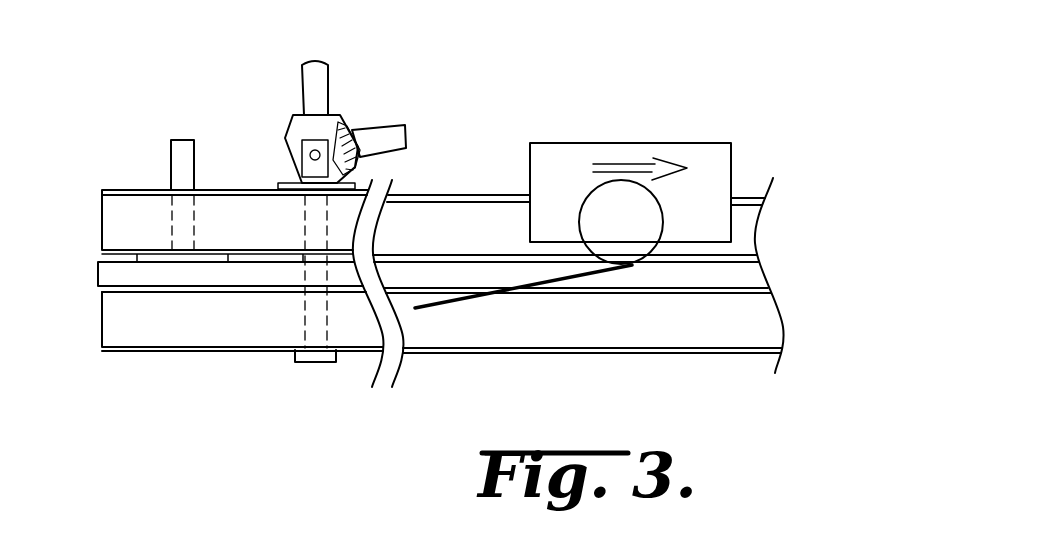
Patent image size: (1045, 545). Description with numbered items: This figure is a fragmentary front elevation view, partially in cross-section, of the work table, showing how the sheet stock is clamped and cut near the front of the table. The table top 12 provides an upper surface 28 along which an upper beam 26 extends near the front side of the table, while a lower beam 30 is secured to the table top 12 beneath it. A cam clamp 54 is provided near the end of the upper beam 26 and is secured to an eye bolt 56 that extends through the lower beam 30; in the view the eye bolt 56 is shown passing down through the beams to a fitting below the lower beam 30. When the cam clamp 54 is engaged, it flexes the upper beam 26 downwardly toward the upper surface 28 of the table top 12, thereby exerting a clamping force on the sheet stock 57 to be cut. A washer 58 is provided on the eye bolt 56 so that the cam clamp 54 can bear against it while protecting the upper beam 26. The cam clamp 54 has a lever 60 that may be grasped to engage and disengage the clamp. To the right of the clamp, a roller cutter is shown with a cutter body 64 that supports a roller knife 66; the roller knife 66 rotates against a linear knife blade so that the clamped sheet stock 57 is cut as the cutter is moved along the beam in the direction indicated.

The table top 12 is at (138, 272).
The upper beam 26 is at (150, 207).
The upper surface 28 is at (162, 256).
The lower beam 30 is at (190, 327).
The cam clamp 54 is at (338, 112).
The eye bolt 56 is at (318, 310).
The sheet stock 57 is at (482, 298).
The washer 58 is at (368, 178).
The lever 60 is at (380, 137).
The cutter body 64 is at (698, 165).
The roller knife 66 is at (622, 232).